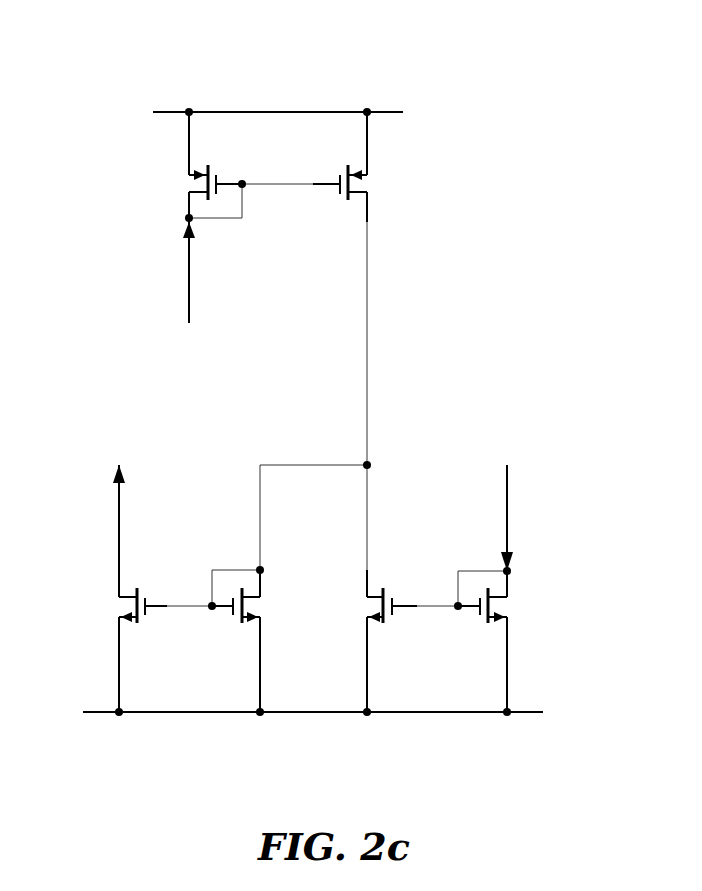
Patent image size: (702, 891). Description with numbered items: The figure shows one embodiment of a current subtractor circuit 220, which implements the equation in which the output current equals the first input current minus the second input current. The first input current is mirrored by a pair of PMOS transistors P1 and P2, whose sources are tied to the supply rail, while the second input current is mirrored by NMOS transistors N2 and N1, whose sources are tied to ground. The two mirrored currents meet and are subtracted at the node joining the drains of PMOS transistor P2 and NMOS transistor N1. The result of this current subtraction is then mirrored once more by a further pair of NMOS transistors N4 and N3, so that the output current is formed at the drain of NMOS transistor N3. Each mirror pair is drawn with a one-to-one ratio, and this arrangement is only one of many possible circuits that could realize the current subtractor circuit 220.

The current subtractor circuit 220 is at (301, 387).
The PMOS transistor P1 is at (202, 156).
The PMOS transistor P2 is at (358, 167).
The NMOS transistor N1 is at (374, 641).
The NMOS transistor N2 is at (500, 641).
The NMOS transistor N3 is at (127, 650).
The NMOS transistor N4 is at (256, 641).